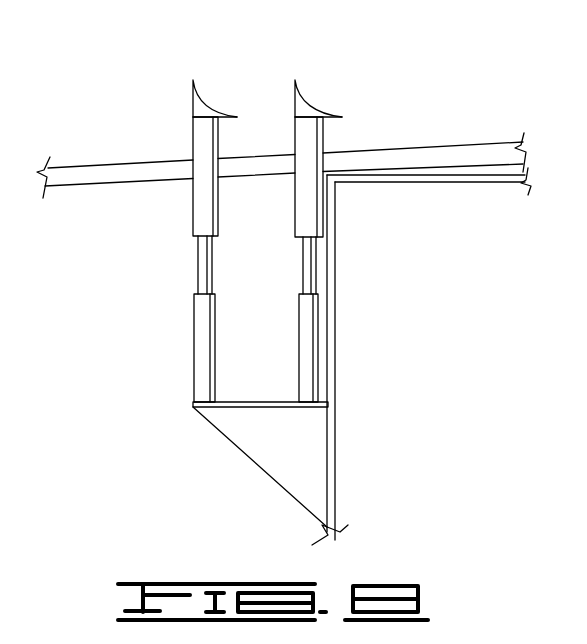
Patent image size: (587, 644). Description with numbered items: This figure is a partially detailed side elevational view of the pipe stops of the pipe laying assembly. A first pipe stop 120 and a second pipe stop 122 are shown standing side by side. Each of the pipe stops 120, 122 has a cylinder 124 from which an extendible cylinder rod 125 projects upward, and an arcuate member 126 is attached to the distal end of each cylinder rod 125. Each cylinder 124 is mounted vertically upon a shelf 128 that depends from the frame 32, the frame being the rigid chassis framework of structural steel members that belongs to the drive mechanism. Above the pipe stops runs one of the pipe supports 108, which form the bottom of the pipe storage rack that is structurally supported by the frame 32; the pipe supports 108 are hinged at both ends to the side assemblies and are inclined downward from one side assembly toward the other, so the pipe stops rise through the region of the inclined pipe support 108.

The pipe support 108 is at (432, 153).
The frame 32 is at (332, 330).
The second pipe stop 122 is at (207, 100).
The first pipe stop 120 is at (312, 100).
The arcuate member 126 is at (297, 105).
The cylinder rod 125 is at (308, 263).
The cylinder 124 is at (308, 322).
The shelf 128 is at (250, 408).